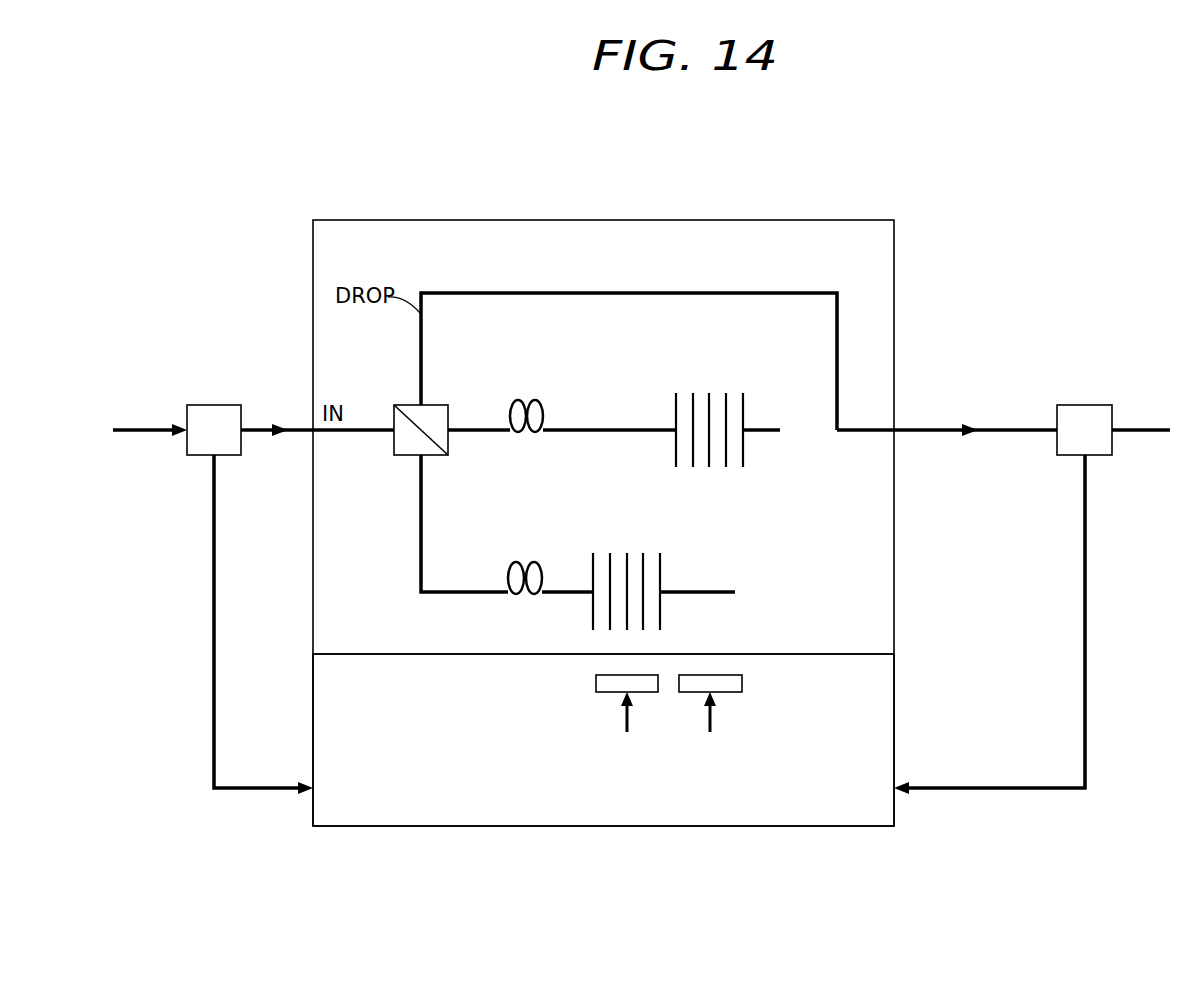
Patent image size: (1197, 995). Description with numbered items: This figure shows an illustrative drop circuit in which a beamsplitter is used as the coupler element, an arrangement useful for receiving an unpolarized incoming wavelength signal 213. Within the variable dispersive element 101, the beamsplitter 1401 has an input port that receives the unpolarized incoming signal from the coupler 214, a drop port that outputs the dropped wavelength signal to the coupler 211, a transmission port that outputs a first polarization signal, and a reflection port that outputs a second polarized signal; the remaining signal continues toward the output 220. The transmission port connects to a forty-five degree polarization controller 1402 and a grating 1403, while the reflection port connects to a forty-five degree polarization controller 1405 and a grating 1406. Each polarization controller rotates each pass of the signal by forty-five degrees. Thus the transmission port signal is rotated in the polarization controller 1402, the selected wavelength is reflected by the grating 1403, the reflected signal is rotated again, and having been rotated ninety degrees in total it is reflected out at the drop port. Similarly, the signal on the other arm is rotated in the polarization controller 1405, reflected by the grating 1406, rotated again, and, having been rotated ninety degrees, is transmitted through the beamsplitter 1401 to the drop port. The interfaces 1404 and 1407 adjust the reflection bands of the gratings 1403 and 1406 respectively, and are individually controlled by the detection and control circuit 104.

The variable dispersive element 101 is at (602, 219).
The detection and control circuit 104 is at (605, 827).
The unpolarized incoming wavelength signal 213 is at (145, 429).
The coupler 214 is at (214, 404).
The coupler 211 is at (1085, 404).
The output optical fiber 220 is at (1147, 429).
The beamsplitter 1401 is at (404, 404).
The polarization controller 1402 is at (535, 400).
The grating 1403 is at (717, 393).
The interface 1404 is at (742, 684).
The polarization controller 1405 is at (534, 560).
The grating 1406 is at (635, 553).
The interface 1407 is at (596, 684).